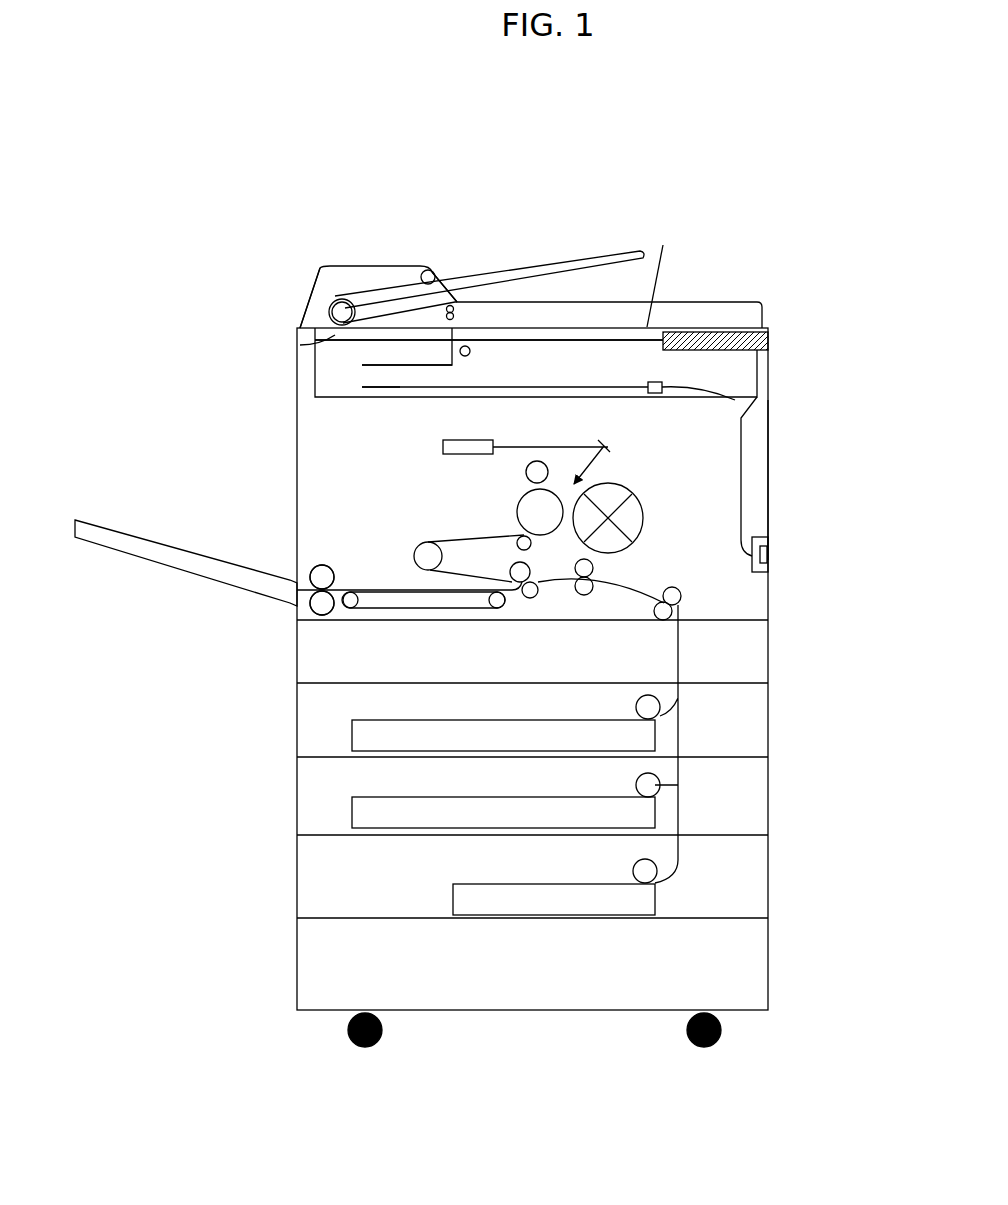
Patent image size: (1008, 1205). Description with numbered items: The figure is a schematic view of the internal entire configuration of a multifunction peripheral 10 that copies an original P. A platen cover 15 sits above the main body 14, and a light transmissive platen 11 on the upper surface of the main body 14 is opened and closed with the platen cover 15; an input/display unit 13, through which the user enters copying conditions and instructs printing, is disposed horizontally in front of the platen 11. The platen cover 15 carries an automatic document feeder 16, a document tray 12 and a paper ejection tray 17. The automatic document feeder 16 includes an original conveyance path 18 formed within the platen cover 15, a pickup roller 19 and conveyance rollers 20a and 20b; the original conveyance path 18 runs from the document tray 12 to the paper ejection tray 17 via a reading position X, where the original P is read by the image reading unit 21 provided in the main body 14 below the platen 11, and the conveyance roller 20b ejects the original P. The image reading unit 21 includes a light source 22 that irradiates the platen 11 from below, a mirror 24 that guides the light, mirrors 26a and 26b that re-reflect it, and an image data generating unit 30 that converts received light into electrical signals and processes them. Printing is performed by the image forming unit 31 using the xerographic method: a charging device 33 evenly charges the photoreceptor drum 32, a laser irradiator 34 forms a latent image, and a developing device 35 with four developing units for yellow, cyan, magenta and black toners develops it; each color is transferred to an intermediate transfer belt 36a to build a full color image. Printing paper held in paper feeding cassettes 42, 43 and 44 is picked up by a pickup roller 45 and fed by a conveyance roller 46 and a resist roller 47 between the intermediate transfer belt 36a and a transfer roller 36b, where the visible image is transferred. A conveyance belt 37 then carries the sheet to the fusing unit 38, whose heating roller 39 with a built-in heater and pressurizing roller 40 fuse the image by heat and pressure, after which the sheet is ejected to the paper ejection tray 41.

The multifunction peripheral 10 is at (527, 142).
The platen 11 is at (760, 302).
The document tray 12 is at (570, 265).
The input/display unit 13 is at (755, 332).
The main body 14 is at (780, 432).
The platen cover 15 is at (686, 302).
The automatic document feeder 16 is at (380, 267).
The paper ejection tray 17 is at (493, 276).
The original conveyance path 18 is at (318, 267).
The pickup roller 19 is at (430, 270).
The conveyance roller 20a is at (330, 308).
The conveyance roller 20b is at (446, 309).
The image reading unit 21 is at (757, 360).
The light source 22 is at (470, 352).
The mirror 24 is at (455, 365).
The mirror 26a is at (360, 362).
The mirror 26b is at (360, 388).
The image data generating unit 30 is at (657, 382).
The image forming unit 31 is at (774, 486).
The photoreceptor drum 32 is at (512, 505).
The charging device 33 is at (525, 475).
The laser irradiator 34 is at (443, 447).
The developing device 35 is at (643, 505).
The intermediate transfer belt 36a is at (422, 545).
The transfer roller 36b is at (530, 598).
The conveyance belt 37 is at (368, 590).
The fusing unit 38 is at (212, 556).
The heating roller 39 is at (310, 565).
The pressurizing roller 40 is at (298, 598).
The paper ejection tray 41 is at (85, 520).
The paper feeding cassette 42 is at (352, 725).
The paper feeding cassette 43 is at (352, 805).
The paper feeding cassette 44 is at (453, 898).
The pickup roller 45 is at (678, 783).
The conveyance roller 46 is at (683, 597).
The resist roller 47 is at (583, 596).
The original P is at (663, 245).
The reading position X is at (300, 340).